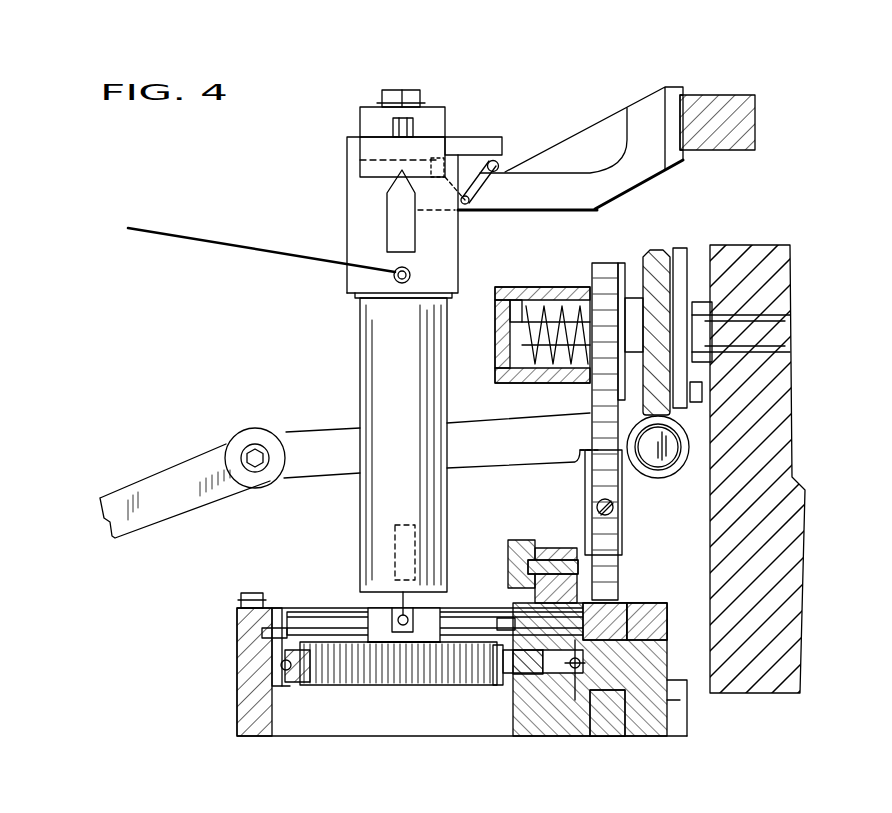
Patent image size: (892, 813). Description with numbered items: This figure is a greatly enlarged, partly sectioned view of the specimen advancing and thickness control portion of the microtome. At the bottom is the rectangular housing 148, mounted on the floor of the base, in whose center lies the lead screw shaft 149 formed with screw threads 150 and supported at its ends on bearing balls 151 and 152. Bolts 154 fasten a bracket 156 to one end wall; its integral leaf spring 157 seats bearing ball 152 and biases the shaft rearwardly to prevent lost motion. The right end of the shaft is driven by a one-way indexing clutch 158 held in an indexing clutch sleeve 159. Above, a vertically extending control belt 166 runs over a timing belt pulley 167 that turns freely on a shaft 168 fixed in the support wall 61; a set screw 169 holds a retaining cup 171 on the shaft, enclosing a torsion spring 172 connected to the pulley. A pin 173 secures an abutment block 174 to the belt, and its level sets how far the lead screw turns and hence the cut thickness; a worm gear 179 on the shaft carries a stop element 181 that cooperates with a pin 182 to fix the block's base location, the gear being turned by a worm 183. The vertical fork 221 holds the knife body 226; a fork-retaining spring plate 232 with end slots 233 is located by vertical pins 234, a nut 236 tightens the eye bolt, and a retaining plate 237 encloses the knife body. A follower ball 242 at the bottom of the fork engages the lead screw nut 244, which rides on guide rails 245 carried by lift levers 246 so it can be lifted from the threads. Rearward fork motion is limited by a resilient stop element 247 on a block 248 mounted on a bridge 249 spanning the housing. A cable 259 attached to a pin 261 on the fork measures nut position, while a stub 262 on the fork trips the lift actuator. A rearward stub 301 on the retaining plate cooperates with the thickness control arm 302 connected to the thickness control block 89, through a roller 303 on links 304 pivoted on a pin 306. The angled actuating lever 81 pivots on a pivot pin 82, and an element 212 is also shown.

The support wall 61 is at (782, 661).
The angled actuating lever 81 is at (145, 494).
The pivot pin 82 is at (254, 448).
The thickness control block 89 is at (737, 105).
The rectangular housing 148 is at (250, 711).
The lead screw shaft 149 is at (292, 660).
The screw threads 150 is at (368, 685).
The bearing ball 151 is at (572, 673).
The bearing ball 152 is at (282, 664).
The bolts 154 is at (262, 599).
The bracket 156 is at (277, 613).
The leaf spring 157 is at (284, 690).
The one-way indexing clutch 158 is at (502, 661).
The indexing clutch sleeve 159 is at (582, 707).
The control belt 166 is at (591, 280).
The timing belt pulley 167 is at (620, 263).
The shaft 168 is at (520, 331).
The set screw 169 is at (505, 293).
The retaining cup 171 is at (548, 386).
The torsion spring 172 is at (527, 300).
The pin 173 is at (614, 508).
The abutment block 174 is at (622, 529).
The worm gear 179 is at (660, 263).
The stop element 181 is at (632, 291).
The pin 182 is at (642, 286).
The worm 183 is at (652, 469).
The bracket 212 is at (694, 404).
The vertical fork 221 is at (376, 394).
The knife body 226 is at (398, 217).
The fork-retaining spring plate 232 is at (362, 118).
The slots 233 is at (412, 124).
The vertical pin 234 is at (398, 126).
The nut 236 is at (397, 92).
The retaining plate 237 is at (346, 152).
The follower ball 242 is at (412, 621).
The lead screw nut 244 is at (428, 644).
The guide rails 245 is at (345, 618).
The lift levers 246 is at (262, 633).
The stop element 247 is at (520, 538).
The block 248 is at (562, 549).
The bridge 249 is at (570, 591).
The cable 259 is at (236, 240).
The pin 261 is at (411, 275).
The stub 262 is at (362, 536).
The stub 301 is at (476, 140).
The thickness control arm 302 is at (572, 201).
The roller 303 is at (496, 163).
The links 304 is at (470, 206).
The pin 306 is at (465, 213).